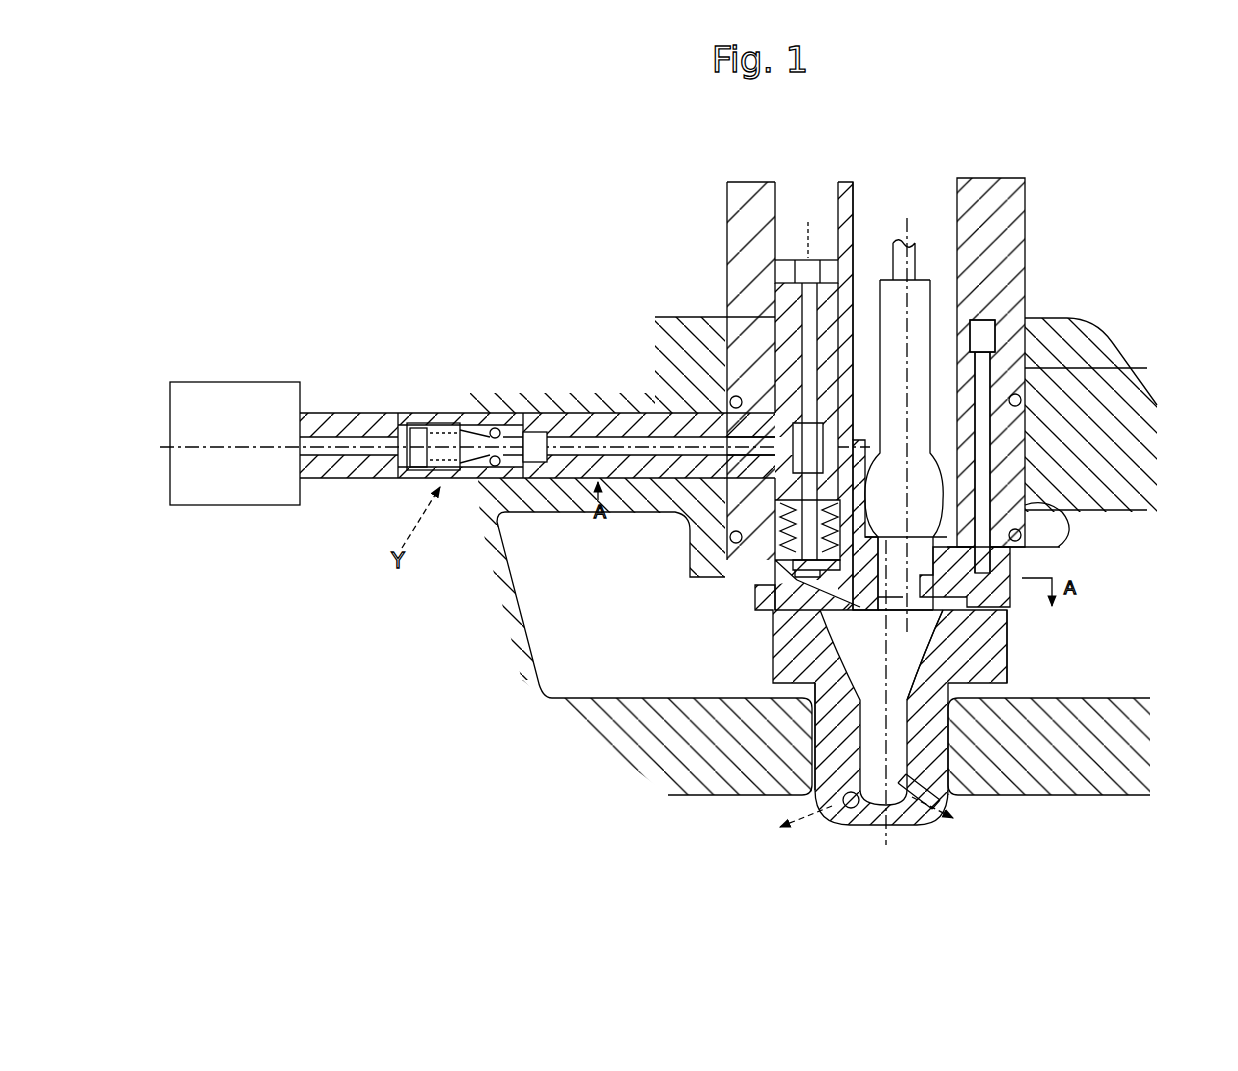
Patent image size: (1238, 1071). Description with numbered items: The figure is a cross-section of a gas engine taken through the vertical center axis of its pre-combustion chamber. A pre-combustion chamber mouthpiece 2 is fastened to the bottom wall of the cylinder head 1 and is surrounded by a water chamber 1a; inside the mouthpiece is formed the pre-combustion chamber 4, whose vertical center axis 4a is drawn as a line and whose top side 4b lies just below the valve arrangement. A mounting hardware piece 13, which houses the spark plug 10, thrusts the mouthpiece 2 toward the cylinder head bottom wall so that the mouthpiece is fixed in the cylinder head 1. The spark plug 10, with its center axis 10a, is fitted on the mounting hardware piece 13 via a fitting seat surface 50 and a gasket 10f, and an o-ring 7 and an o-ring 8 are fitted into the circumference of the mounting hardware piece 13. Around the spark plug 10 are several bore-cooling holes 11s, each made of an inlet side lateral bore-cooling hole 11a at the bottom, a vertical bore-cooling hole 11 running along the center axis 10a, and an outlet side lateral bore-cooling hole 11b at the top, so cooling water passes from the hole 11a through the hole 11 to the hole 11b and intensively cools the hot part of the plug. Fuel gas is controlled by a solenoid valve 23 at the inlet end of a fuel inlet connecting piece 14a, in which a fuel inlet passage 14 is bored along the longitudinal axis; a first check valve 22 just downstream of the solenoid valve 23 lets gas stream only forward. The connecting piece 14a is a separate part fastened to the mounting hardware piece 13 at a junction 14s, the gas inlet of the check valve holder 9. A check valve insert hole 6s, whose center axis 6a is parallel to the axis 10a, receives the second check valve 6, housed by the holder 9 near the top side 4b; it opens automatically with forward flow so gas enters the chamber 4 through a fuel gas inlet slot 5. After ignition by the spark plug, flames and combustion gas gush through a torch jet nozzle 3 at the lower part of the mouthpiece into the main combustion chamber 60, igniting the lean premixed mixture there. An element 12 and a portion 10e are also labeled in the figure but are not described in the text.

The cylinder head 1 is at (1150, 405).
The water chamber 1a is at (1050, 666).
The pre-combustion chamber mouthpiece 2 is at (910, 826).
The torch jet nozzle 3 is at (843, 826).
The pre-combustion chamber 4 is at (765, 650).
The vertical center axis of the pre-combustion chamber 4a is at (822, 748).
The top side of the pre-combustion chamber 4b is at (945, 628).
The fuel gas inlet slot 5 is at (840, 600).
The second check valve 6 is at (697, 570).
The center axis of the check valve insert hole 6a is at (808, 238).
The check valve insert hole 6s is at (838, 207).
The o-ring 7 is at (730, 537).
The o-ring 8 is at (728, 398).
The check valve holder 9 is at (787, 305).
The spark plug 10 is at (930, 471).
The center axis of the spark plug 10a is at (907, 333).
The valve rod tip 10e is at (927, 617).
The gasket 10f is at (1062, 547).
The vertical bore-cooling hole 11 is at (985, 430).
The lateral bore-cooling hole 11a is at (1010, 573).
The lateral bore-cooling hole 11b is at (995, 325).
The bore-cooling hole 11s is at (1025, 442).
The guide wall 12 is at (1013, 217).
The mounting hardware piece 13 is at (1073, 510).
The fuel inlet passage 14 is at (572, 412).
The fuel inlet connecting piece 14a is at (497, 550).
The junction 14s is at (727, 387).
The first check valve 22 is at (437, 420).
The solenoid valve 23 is at (240, 507).
The fitting seat surface 50 is at (872, 520).
The main combustion chamber 60 is at (728, 916).